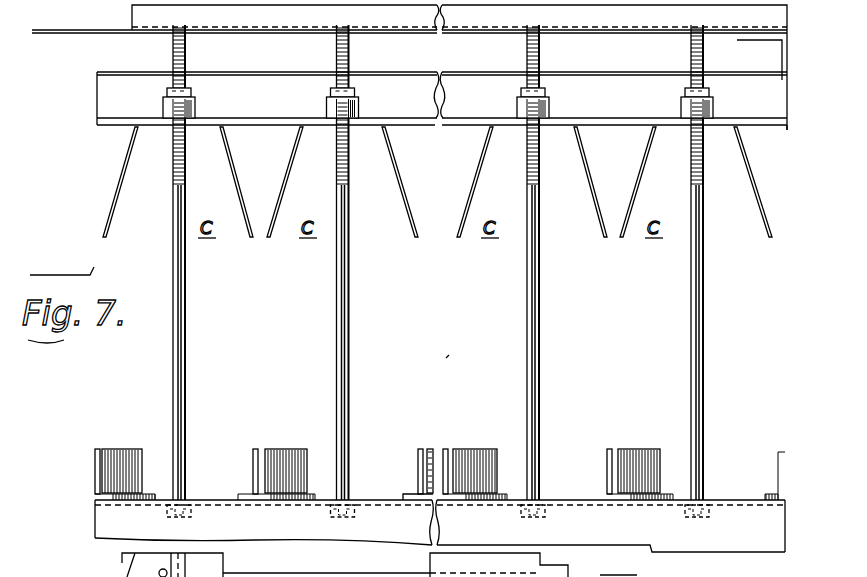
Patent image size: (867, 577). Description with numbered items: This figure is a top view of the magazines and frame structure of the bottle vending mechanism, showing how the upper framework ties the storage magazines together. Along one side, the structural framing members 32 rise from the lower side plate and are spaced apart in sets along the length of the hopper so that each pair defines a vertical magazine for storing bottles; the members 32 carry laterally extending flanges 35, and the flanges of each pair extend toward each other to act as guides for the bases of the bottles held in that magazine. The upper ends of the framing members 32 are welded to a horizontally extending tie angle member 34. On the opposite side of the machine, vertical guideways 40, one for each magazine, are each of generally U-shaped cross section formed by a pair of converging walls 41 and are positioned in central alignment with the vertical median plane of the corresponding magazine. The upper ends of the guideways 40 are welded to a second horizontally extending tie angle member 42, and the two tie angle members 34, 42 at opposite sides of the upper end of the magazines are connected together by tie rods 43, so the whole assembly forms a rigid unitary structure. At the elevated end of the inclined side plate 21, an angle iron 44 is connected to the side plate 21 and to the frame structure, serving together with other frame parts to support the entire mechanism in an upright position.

The side plate 21 is at (132, 13).
The structural framing members 32 is at (100, 470).
The tie angle member 34 is at (748, 535).
The laterally extending flanges 35 is at (108, 496).
The guideways 40 is at (213, 128).
The converging walls 41 is at (470, 186).
The tie angle member 42 is at (625, 83).
The tie rods 43 is at (185, 338).
The angle iron 44 is at (762, 41).